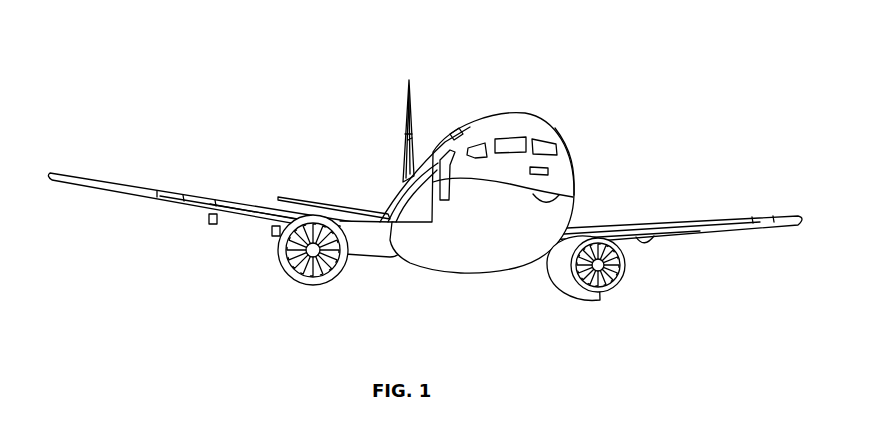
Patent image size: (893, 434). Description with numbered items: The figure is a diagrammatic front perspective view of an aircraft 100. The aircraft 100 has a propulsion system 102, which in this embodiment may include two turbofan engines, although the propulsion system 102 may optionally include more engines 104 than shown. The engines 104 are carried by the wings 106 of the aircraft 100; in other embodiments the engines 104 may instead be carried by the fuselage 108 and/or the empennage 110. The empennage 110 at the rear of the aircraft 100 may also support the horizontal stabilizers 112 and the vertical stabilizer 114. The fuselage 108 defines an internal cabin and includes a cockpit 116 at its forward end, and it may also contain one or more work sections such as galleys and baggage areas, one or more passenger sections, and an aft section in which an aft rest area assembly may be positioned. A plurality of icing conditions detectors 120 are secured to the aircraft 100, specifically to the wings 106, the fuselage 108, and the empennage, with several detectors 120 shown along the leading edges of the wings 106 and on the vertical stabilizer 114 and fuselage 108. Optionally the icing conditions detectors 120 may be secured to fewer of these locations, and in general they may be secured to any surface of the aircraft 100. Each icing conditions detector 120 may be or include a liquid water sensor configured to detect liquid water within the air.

The aircraft 100 is at (236, 41).
The propulsion system 102 is at (658, 292).
The engines 104 is at (311, 284).
The wings 106 is at (150, 192).
The fuselage 108 is at (568, 160).
The empennage 110 is at (400, 189).
The horizontal stabilizers 112 is at (303, 201).
The vertical stabilizer 114 is at (395, 129).
The cockpit 116 is at (512, 142).
The icing conditions detectors 120 is at (413, 140).